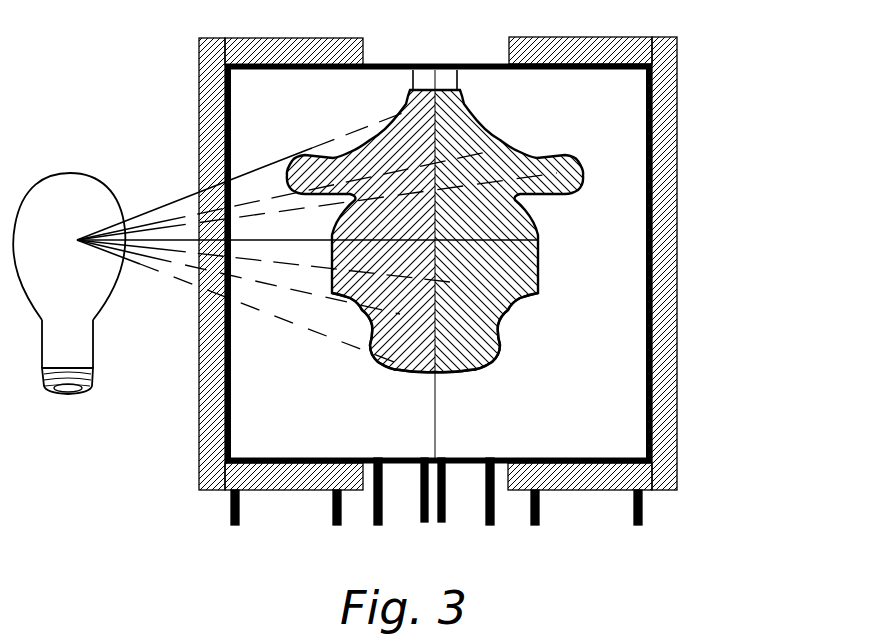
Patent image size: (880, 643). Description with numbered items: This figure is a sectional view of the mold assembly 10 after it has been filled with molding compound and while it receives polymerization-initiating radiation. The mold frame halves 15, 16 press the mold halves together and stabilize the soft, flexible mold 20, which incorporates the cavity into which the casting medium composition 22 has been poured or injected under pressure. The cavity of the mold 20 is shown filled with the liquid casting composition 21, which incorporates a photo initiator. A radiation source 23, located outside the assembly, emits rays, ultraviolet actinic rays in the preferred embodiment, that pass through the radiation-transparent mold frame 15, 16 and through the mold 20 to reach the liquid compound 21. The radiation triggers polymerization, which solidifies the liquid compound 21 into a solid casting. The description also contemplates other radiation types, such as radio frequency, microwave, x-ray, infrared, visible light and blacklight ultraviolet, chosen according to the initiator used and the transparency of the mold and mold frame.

The mold assembly 10 is at (453, 28).
The mold frame half 15 is at (199, 447).
The mold frame half 16 is at (677, 141).
The mold 20 is at (570, 418).
The liquid casting composition 21 is at (507, 308).
The casting medium composition 22 is at (510, 262).
The radiation source 23 is at (91, 302).